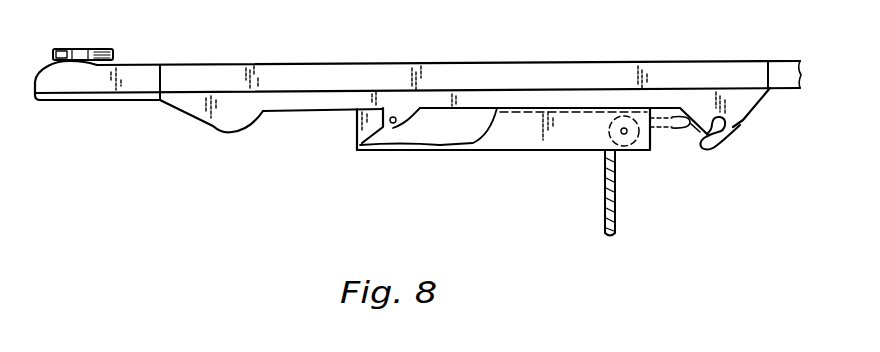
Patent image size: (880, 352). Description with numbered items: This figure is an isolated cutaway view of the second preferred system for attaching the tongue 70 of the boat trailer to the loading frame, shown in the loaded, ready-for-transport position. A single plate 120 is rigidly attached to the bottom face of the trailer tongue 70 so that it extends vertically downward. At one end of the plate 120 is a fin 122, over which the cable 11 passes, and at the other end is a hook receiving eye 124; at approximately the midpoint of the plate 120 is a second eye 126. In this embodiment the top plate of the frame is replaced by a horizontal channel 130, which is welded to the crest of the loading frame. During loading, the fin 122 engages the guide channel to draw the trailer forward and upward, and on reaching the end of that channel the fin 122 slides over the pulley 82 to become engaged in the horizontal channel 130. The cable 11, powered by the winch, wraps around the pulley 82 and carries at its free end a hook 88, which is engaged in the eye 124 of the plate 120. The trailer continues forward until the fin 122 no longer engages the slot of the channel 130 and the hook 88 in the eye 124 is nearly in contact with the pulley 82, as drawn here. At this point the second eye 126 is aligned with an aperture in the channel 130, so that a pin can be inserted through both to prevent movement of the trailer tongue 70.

The tongue 70 is at (418, 72).
The plate 120 is at (318, 103).
The fin 122 is at (215, 122).
The hook receiving eye 124 is at (755, 118).
The second eye 126 is at (393, 123).
The horizontal channel 130 is at (507, 133).
The pulley 82 is at (633, 150).
The hook 88 is at (720, 147).
The cable 11 is at (618, 203).